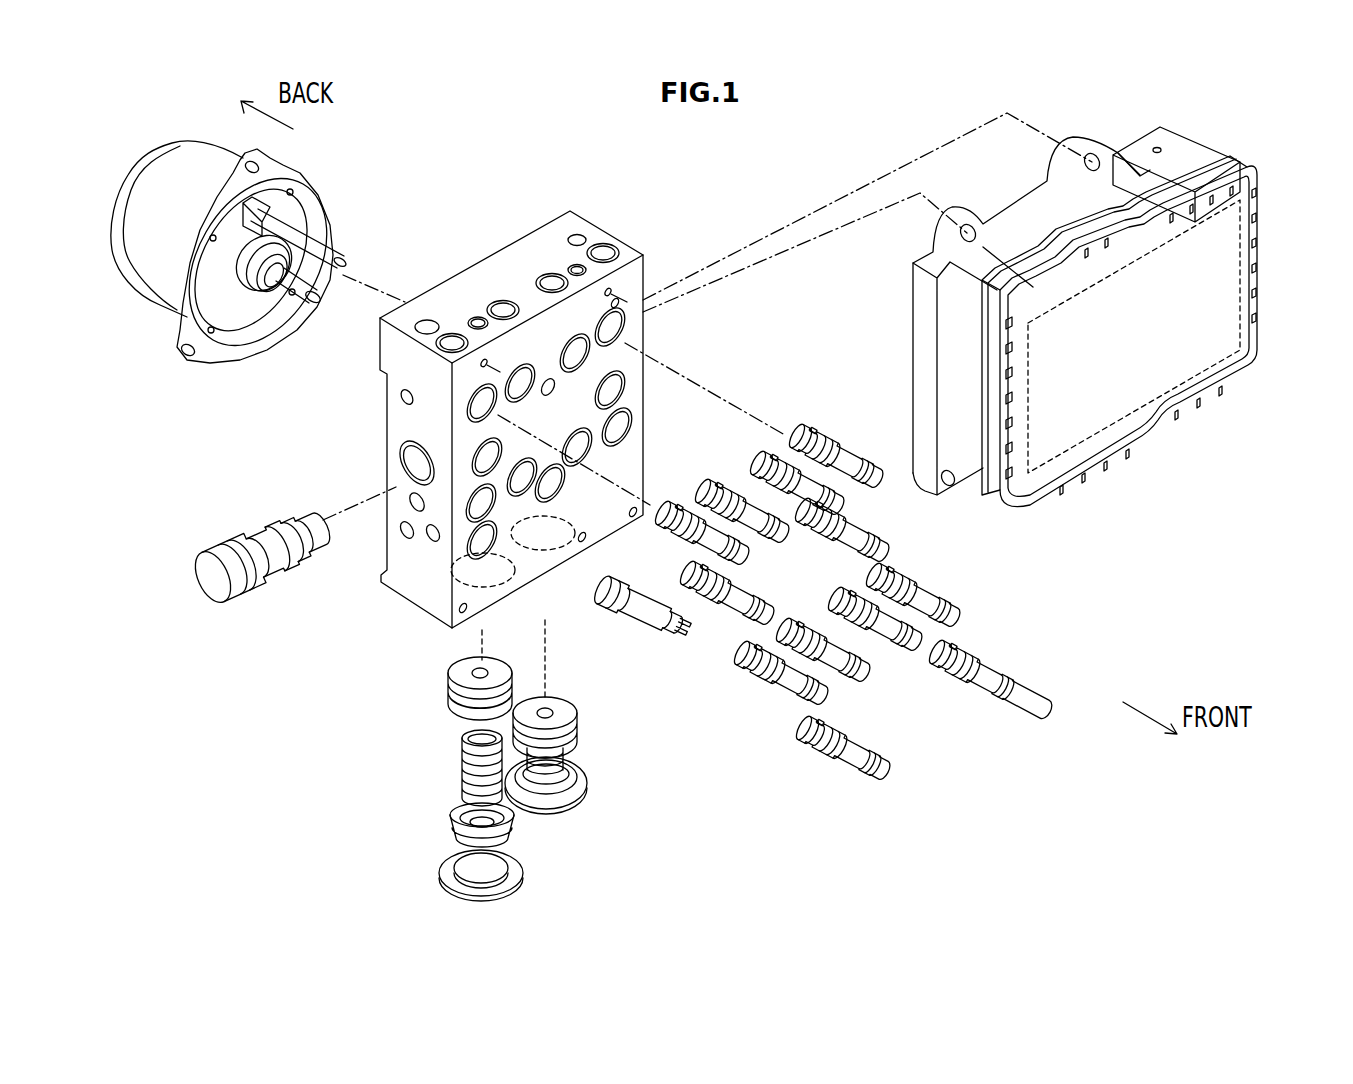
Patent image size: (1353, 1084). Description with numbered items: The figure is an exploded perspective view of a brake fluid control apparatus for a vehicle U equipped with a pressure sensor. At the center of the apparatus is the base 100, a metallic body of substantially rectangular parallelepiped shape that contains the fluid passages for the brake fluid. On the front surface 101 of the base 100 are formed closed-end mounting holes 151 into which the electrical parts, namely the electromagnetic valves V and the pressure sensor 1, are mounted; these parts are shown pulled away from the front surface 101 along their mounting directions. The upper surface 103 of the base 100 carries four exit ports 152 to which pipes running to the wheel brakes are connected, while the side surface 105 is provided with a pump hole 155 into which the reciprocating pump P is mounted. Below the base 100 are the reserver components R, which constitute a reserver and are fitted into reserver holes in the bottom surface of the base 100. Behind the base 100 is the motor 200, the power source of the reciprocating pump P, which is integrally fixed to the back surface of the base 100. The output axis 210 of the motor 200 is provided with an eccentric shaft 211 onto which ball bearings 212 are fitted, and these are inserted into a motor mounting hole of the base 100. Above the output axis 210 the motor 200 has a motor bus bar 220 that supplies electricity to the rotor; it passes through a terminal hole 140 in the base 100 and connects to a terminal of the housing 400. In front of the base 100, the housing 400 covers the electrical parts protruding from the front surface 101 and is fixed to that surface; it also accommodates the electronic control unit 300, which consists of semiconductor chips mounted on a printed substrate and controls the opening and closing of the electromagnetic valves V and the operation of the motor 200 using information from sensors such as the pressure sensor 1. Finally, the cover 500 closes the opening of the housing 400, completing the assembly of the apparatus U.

The pressure sensor 1 is at (648, 614).
The base 100 is at (498, 260).
The front surface 101 is at (640, 352).
The upper surface 103 is at (541, 247).
The side surface 105 is at (395, 412).
The terminal hole 140 is at (553, 389).
The mounting holes 151 is at (619, 428).
The exit ports 152 is at (608, 251).
The pump hole 155 is at (405, 478).
The motor 200 is at (216, 131).
The output axis 210 is at (308, 306).
The eccentric shaft 211 is at (272, 290).
The ball bearings 212 is at (245, 300).
The motor bus bar 220 is at (298, 214).
The electronic control unit 300 is at (1221, 349).
The housing 400 is at (1222, 143).
The cover 500 is at (1266, 259).
The brake fluid control apparatus for a vehicle U is at (553, 163).
The reciprocating pump P is at (229, 514).
The reserver components R is at (430, 900).
The electromagnetic valves V is at (857, 463).